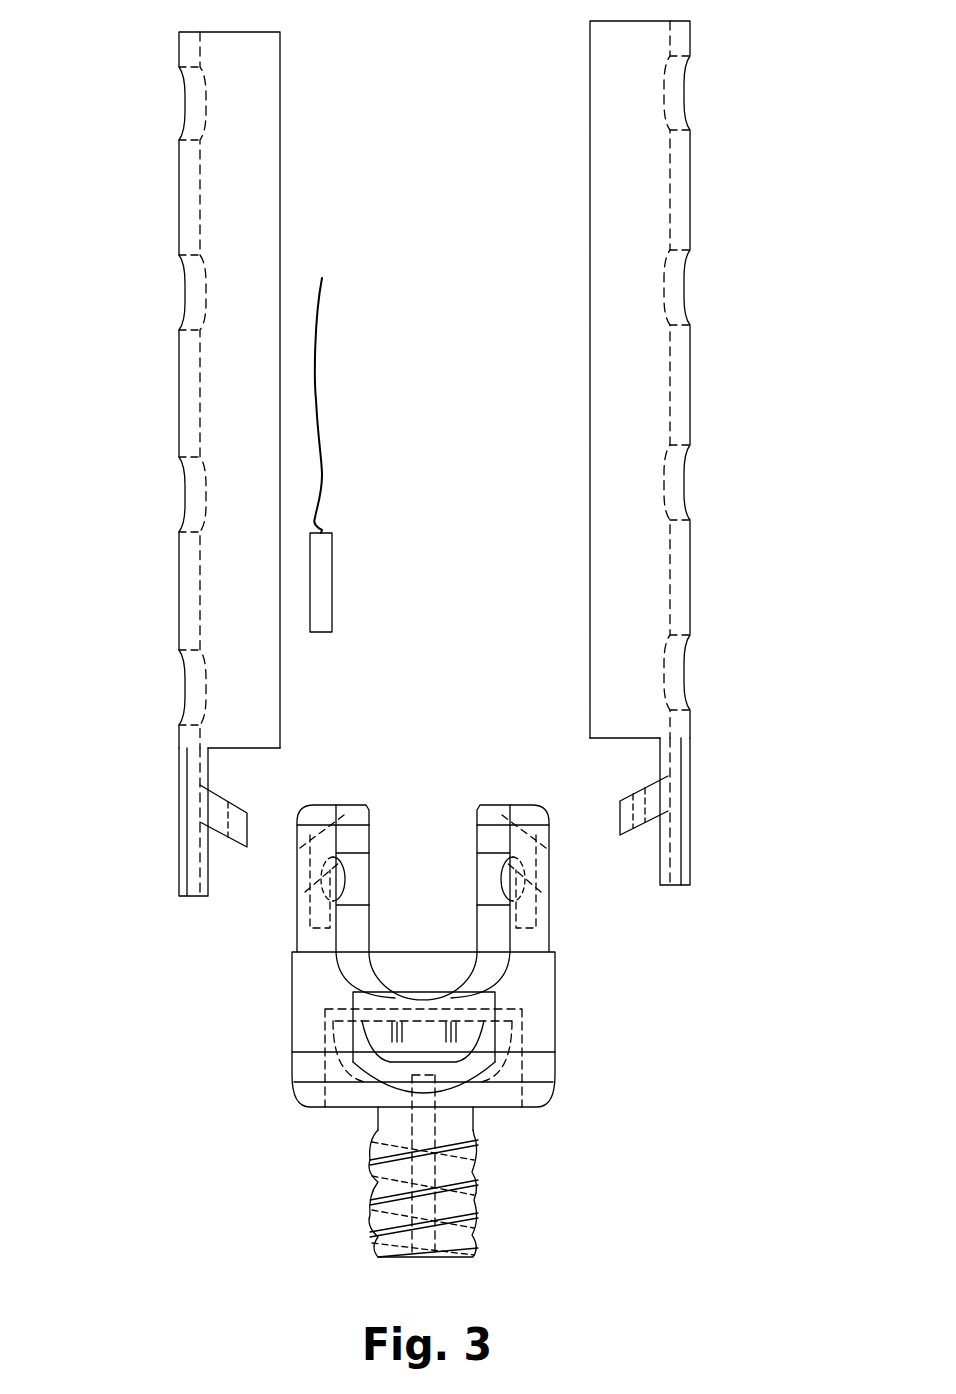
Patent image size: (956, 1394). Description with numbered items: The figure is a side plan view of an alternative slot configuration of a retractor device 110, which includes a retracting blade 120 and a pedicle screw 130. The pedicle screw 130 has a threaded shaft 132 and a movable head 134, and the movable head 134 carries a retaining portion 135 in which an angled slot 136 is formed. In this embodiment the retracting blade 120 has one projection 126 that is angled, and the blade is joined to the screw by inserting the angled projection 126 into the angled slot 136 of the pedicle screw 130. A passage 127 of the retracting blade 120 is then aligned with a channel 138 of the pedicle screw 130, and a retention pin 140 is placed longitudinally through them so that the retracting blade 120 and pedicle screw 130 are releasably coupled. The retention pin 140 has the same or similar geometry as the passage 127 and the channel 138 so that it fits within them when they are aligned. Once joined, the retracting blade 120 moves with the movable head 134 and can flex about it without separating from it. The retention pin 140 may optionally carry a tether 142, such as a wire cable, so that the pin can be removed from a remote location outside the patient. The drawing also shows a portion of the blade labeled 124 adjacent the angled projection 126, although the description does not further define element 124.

The retractor device 110 is at (465, 43).
The retracting blade 120 is at (612, 420).
The rail tab 124 is at (183, 873).
The angled projection 126 is at (627, 805).
The passage 127 is at (645, 822).
The pedicle screw 130 is at (376, 1118).
The threaded shaft 132 is at (375, 1172).
The movable head 134 is at (302, 1032).
The retaining portion 135 is at (492, 808).
The angled slot 136 is at (312, 868).
The channel 138 is at (320, 812).
The retention pin 140 is at (325, 562).
The tether 142 is at (323, 474).